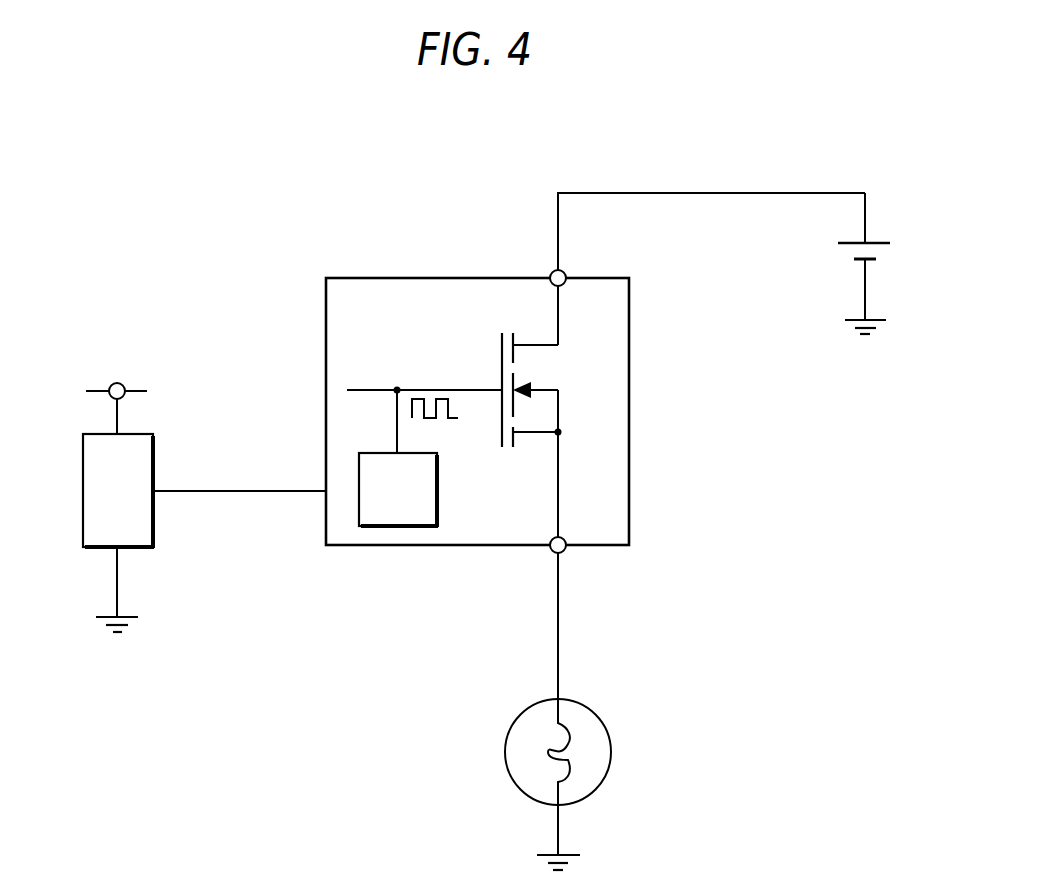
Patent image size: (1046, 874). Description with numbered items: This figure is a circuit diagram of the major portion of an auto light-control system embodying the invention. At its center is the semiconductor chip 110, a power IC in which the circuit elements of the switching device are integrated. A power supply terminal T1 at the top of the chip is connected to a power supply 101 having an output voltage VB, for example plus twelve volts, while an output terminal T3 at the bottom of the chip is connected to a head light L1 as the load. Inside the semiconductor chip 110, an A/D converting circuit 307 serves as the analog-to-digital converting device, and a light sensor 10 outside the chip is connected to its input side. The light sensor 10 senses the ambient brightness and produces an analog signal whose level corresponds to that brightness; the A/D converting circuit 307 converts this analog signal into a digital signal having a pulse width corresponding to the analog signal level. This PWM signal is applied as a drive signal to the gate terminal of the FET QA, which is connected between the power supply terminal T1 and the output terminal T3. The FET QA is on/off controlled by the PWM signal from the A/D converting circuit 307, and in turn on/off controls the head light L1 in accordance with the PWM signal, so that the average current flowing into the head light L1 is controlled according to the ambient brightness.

The semiconductor chip 110 is at (400, 278).
The FET QA is at (551, 390).
The A/D converting circuit 307 is at (438, 488).
The power supply terminal T1 is at (565, 272).
The output terminal T3 is at (565, 551).
The power supply 101 is at (872, 236).
The output voltage VB is at (907, 269).
The light sensor 10 is at (75, 490).
The head light L1 is at (612, 752).